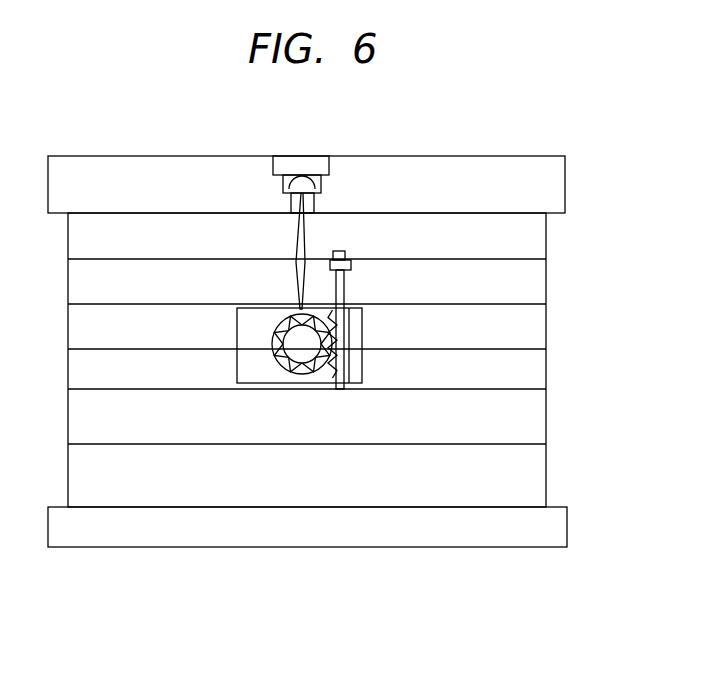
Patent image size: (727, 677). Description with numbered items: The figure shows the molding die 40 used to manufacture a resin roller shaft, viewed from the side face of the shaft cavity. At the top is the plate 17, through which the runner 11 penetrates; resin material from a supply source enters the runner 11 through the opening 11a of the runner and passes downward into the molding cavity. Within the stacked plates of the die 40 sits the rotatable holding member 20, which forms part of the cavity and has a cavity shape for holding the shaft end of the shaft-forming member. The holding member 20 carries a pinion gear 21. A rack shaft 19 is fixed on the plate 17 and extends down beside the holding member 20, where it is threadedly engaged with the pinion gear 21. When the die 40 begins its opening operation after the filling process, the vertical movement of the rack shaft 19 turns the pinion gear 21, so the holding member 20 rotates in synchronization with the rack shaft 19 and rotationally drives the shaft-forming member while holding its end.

The molding die 40 is at (548, 118).
The plate 17 is at (477, 228).
The opening of the runner 11a is at (302, 165).
The runner 11 is at (298, 233).
The holding member 20 is at (298, 338).
The pinion gear 21 is at (307, 377).
The rack shaft 19 is at (340, 323).